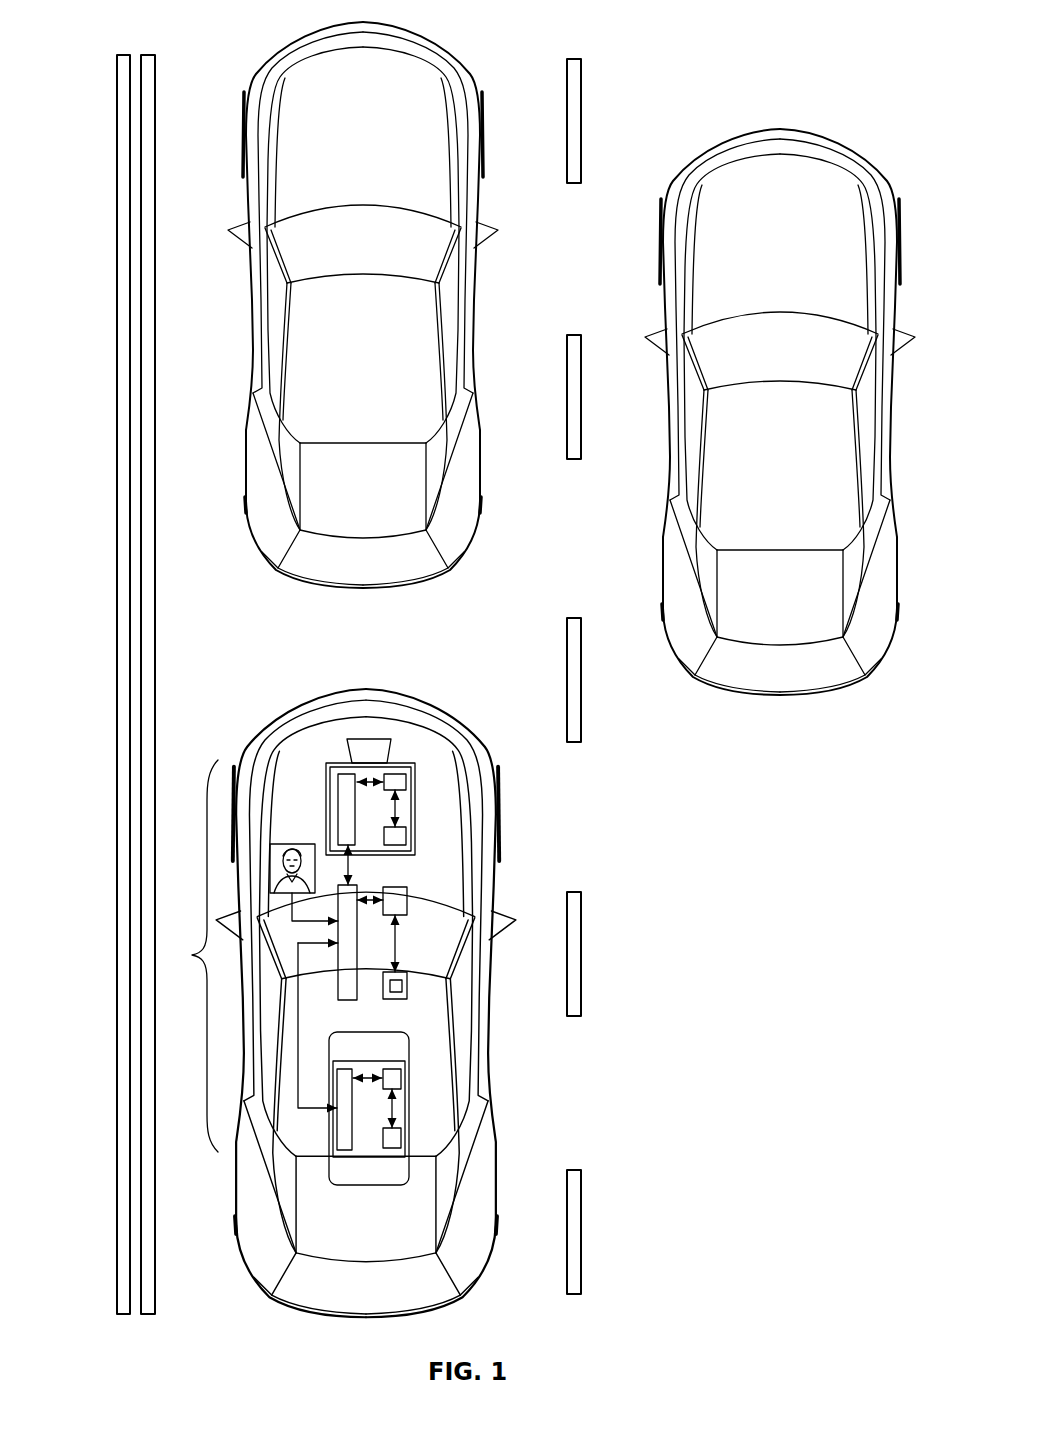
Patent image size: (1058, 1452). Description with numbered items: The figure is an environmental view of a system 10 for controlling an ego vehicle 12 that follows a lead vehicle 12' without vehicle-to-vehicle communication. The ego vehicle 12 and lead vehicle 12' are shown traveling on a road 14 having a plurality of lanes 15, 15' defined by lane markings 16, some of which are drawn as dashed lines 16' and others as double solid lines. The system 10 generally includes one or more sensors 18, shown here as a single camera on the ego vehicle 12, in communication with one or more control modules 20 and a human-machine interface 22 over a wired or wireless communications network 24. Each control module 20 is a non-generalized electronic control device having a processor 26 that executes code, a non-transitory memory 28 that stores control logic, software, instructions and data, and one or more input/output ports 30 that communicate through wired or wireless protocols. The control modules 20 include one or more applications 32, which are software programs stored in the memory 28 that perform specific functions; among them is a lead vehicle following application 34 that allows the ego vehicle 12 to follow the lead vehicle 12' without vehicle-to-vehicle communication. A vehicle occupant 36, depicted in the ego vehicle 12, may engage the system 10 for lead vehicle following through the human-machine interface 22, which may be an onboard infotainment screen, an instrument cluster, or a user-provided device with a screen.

The system 10 is at (823, 42).
The ego vehicle 12 is at (323, 1004).
The lead vehicle 12' is at (571, 396).
The road 14 is at (230, 662).
The lane 15 is at (571, 396).
The other vehicle ahead 15' is at (363, 328).
The lane markings 16 is at (371, 684).
The dashed lines 16' is at (635, 676).
The sensor 18 is at (418, 806).
The control module 20 is at (403, 763).
The human-machine interface (HMI) 22 is at (372, 1190).
The communications network 24 is at (191, 956).
The processor 26 is at (407, 782).
The memory 28 is at (407, 835).
The input/output (I/O) port 30 is at (330, 782).
The application 32 is at (402, 988).
The lead vehicle following (LVF) application 34 is at (396, 986).
The vehicle occupant 36 is at (293, 844).